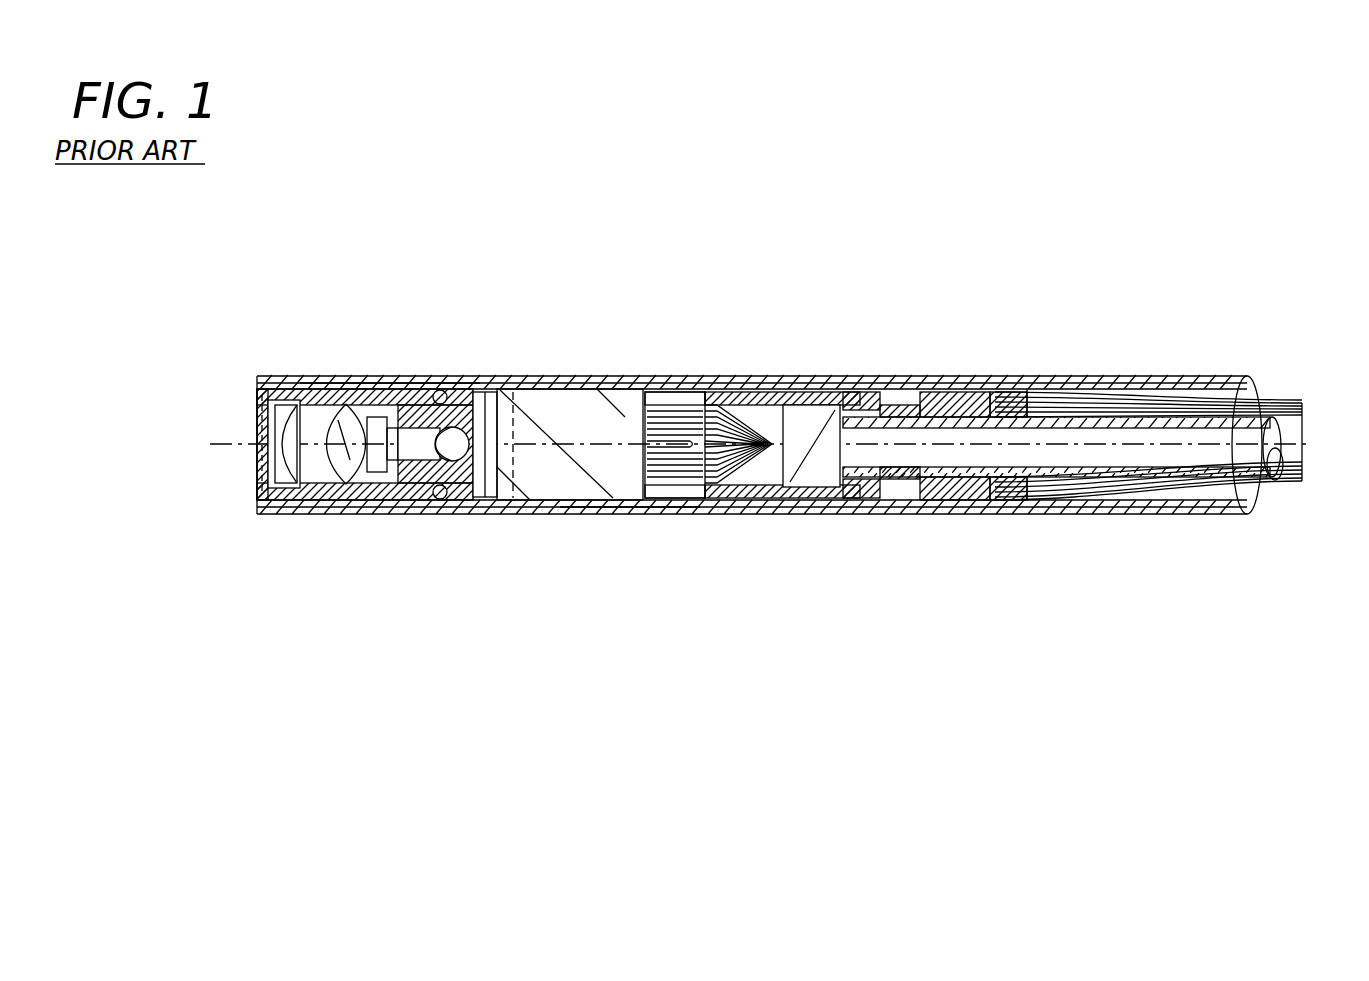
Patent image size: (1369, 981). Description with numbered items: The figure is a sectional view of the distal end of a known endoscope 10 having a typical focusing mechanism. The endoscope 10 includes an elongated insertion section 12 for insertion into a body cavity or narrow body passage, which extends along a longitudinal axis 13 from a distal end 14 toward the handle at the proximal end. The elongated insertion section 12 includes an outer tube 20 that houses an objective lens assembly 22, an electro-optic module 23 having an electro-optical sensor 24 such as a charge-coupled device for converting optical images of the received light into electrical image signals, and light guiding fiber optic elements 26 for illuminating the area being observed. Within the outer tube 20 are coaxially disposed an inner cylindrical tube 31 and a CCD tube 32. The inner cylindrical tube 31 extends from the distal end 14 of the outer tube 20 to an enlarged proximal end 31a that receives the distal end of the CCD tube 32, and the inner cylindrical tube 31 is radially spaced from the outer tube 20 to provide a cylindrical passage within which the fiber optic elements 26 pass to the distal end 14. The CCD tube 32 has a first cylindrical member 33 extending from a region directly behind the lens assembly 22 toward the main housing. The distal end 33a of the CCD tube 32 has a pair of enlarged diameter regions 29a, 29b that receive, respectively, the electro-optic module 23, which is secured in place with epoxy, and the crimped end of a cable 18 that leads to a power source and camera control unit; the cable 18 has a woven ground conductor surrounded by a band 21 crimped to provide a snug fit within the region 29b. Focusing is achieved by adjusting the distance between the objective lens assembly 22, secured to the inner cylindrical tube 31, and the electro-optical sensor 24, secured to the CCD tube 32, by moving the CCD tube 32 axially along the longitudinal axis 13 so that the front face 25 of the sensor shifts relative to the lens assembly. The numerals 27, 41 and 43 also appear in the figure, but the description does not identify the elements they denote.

The endoscope 10 is at (613, 233).
The elongated insertion section 12 is at (585, 362).
The longitudinal axis 13 is at (590, 441).
The distal end 14 is at (252, 514).
The cable 18 is at (1288, 455).
The outer tube 20 is at (620, 515).
The band 21 is at (803, 515).
The objective lens assembly 22 is at (473, 524).
The electro-optic module 23 is at (632, 378).
The electro-optical sensor 24 is at (513, 515).
The front face 25 is at (485, 377).
The light guiding fiber optic elements 26 is at (1288, 405).
The image fiber bundle 27 is at (690, 515).
The enlarged diameter region 29a is at (717, 377).
The enlarged diameter region 29b is at (835, 515).
The inner cylindrical tube 31 is at (960, 515).
The enlarged proximal end 31a is at (948, 378).
The CCD tube 32 is at (880, 515).
The first cylindrical member 33 is at (1095, 378).
The distal end of CCD tube 33a is at (772, 377).
The objective lens 41 is at (337, 393).
The lens holder 43 is at (413, 510).